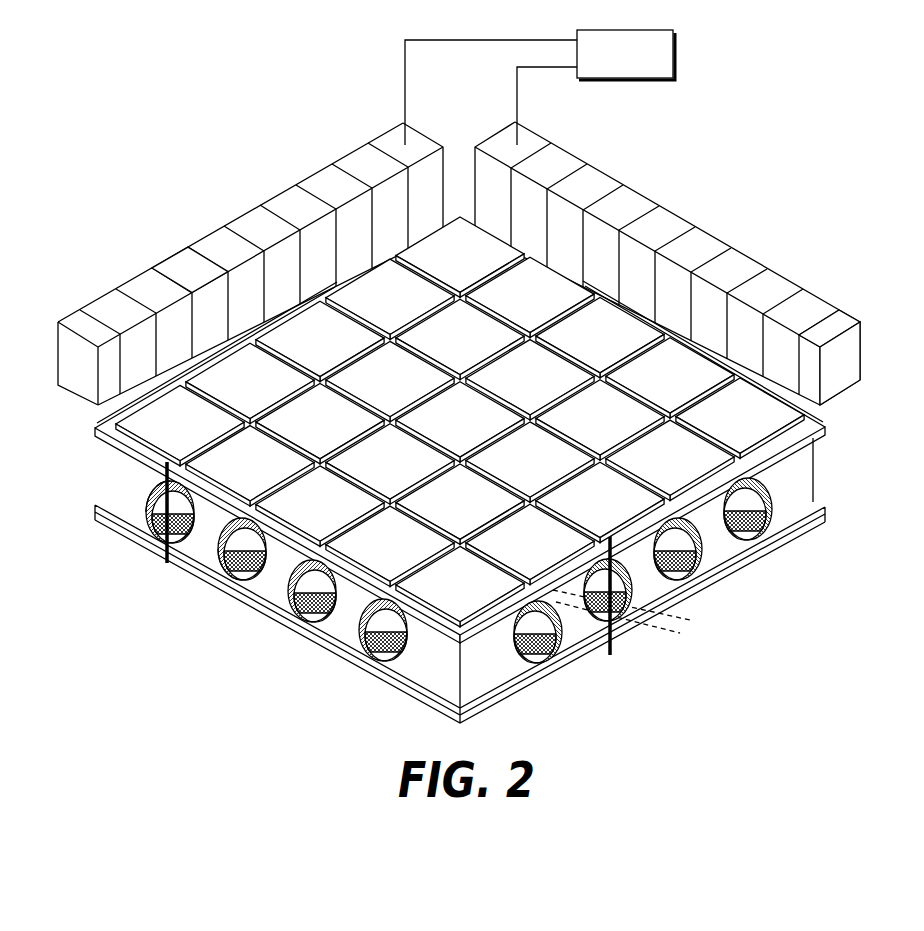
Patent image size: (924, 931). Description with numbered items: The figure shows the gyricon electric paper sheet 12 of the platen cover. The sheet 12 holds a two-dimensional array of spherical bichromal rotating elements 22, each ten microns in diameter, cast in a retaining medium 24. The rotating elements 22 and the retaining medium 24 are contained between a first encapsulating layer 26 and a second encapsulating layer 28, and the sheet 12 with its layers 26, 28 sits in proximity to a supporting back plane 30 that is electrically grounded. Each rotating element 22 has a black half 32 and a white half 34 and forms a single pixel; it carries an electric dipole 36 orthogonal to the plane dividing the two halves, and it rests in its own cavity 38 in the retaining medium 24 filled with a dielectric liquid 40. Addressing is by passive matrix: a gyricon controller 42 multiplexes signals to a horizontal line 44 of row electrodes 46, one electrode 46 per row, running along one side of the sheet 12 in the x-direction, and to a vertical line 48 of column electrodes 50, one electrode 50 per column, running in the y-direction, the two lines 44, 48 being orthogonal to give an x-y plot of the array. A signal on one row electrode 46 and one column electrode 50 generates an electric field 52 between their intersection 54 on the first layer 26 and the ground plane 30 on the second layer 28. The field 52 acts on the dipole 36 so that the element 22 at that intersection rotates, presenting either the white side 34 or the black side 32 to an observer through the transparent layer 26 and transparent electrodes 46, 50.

The gyricon electric paper sheet 12 is at (460, 470).
The spherical bichromal rotating element 22 is at (288, 618).
The retaining medium 24 is at (345, 616).
The first encapsulating layer 26 is at (827, 427).
The second encapsulating layer 28 is at (813, 500).
The supporting back plane 30 is at (827, 507).
The black half 32 is at (225, 575).
The white half 34 is at (222, 548).
The electric dipole 36 is at (142, 543).
The cavity 38 is at (148, 490).
The dielectric liquid 40 is at (150, 500).
The gyricon controller 42 is at (638, 65).
The horizontal line of row electrodes 44 is at (684, 263).
The row electrode 46 is at (815, 305).
The vertical line of column electrodes 48 is at (250, 264).
The column electrode 50 is at (176, 262).
The electric field 52 is at (623, 640).
The intersection 54 is at (544, 540).